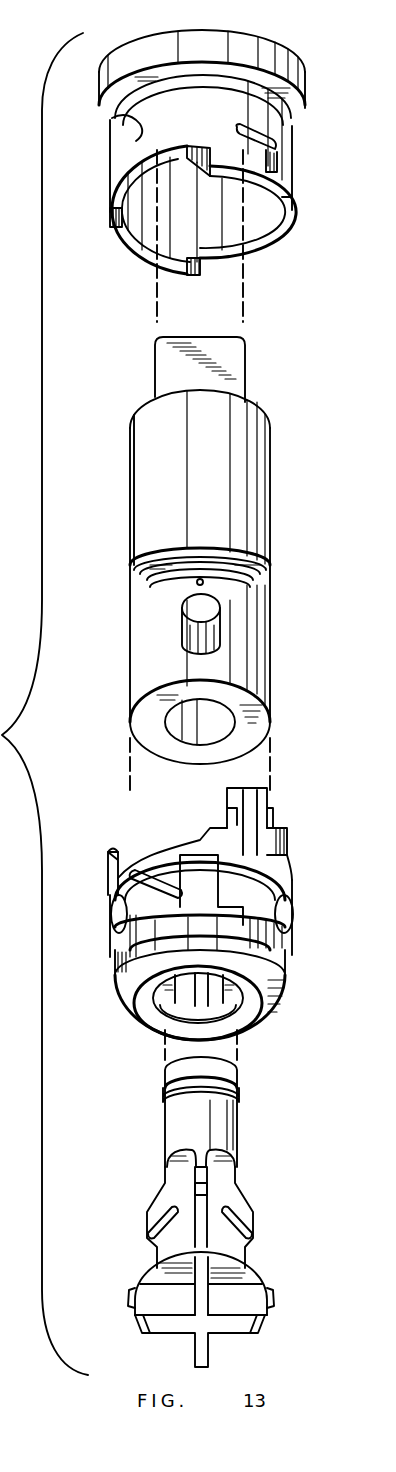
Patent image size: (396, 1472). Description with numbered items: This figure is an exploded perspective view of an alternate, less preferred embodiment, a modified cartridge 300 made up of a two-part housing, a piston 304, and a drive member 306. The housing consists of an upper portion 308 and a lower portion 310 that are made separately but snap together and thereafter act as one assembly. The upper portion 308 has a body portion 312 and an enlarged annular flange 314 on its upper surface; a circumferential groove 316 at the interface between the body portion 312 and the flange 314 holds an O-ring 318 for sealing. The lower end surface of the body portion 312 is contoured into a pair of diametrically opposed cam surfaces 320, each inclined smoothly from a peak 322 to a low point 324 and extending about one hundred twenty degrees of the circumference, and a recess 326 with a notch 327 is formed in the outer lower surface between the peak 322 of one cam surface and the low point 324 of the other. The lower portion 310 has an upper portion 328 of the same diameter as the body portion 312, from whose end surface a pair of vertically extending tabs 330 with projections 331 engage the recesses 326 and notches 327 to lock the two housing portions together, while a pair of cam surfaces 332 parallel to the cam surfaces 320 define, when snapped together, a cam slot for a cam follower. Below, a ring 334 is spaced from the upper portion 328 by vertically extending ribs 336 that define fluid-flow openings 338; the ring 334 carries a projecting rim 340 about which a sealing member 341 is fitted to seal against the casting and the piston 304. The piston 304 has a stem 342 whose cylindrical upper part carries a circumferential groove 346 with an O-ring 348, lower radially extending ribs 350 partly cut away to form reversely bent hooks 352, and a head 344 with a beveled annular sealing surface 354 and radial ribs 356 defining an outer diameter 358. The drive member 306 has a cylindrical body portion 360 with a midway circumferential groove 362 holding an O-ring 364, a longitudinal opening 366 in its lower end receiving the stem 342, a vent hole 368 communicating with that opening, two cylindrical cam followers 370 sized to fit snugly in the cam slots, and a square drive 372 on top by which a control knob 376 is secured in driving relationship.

The cartridge 300 is at (333, 90).
The piston 304 is at (274, 1154).
The drive member 306 is at (292, 516).
The upper portion 308 is at (316, 132).
The lower portion 310 is at (314, 905).
The body portion 312 is at (282, 170).
The annular flange 314 is at (263, 53).
The circumferential groove 316 is at (118, 138).
The O-ring 318 is at (120, 110).
The cam surfaces 320 is at (260, 245).
The peak 322 is at (113, 209).
The low point 324 is at (130, 168).
The recess 326 is at (285, 199).
The notch 327 is at (278, 145).
The upper portion 328 is at (289, 842).
The tabs 330 is at (266, 806).
The projections 331 is at (227, 808).
The cam surfaces 332 is at (160, 852).
The ring 334 is at (283, 932).
The ribs 336 is at (289, 855).
The openings 338 is at (268, 866).
The rim 340 is at (233, 1044).
The sealing member 341 is at (248, 1028).
The stem 342 is at (227, 1125).
The head 344 is at (274, 1286).
The circumferential groove 346 is at (241, 1073).
The O-ring 348 is at (236, 1094).
The ribs 350 is at (156, 1248).
The hooks 352 is at (147, 1215).
The sealing surface 354 is at (242, 1259).
The ribs 356 is at (128, 1294).
The outer diameter 358 is at (133, 1318).
The body portion 360 is at (250, 550).
The circumferential groove 362 is at (255, 568).
The O-ring 364 is at (268, 592).
The opening 366 is at (230, 740).
The vent hole 368 is at (196, 584).
The cam followers 370 is at (190, 632).
The square drive 372 is at (233, 362).
The control knob 376 is at (263, 605).